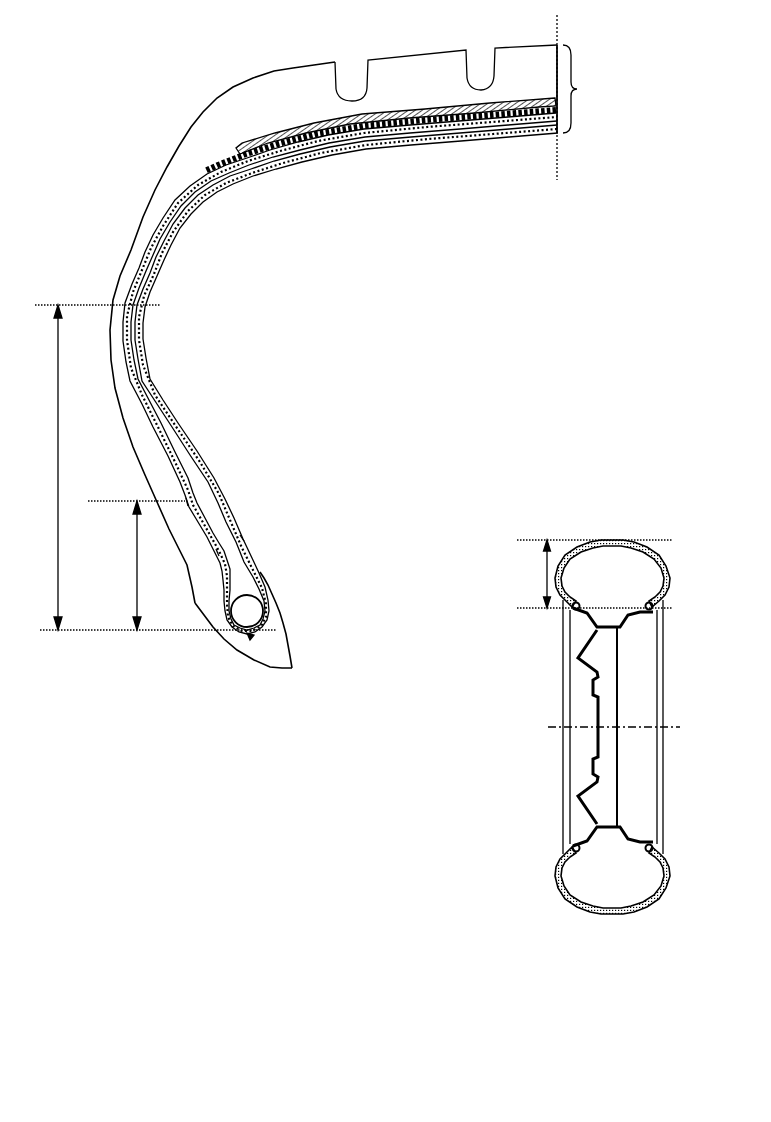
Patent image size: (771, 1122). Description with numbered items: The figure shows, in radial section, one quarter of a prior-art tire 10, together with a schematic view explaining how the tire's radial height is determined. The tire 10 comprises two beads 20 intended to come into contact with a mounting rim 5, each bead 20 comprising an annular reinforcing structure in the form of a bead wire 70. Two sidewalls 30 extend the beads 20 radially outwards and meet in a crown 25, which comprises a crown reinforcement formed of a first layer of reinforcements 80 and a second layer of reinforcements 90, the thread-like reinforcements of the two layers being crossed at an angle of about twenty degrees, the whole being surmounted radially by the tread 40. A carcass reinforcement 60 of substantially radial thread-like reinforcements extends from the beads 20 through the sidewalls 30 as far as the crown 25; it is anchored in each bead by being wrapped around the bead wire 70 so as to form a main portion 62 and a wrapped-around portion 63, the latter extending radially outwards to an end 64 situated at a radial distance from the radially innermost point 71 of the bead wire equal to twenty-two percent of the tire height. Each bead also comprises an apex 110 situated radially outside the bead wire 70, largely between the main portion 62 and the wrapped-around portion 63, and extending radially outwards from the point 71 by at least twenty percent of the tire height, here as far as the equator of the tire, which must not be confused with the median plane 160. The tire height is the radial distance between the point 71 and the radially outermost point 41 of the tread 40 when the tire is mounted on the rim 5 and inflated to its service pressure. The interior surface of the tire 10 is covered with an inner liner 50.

In FIG. 4, the mounting rim 5 is at (686, 650).
In FIG. 3, the tire 10 is at (149, 129).
In FIG. 4, the tire 10 is at (688, 577).
In FIG. 3, the bead 20 is at (212, 595).
In FIG. 3, the crown 25 is at (591, 89).
In FIG. 3, the sidewall 30 is at (117, 285).
In FIG. 3, the tread 40 is at (446, 89).
In FIG. 4, the radially outermost point of the tread 41 is at (612, 532).
In FIG. 3, the inner liner 50 is at (167, 423).
In FIG. 3, the carcass reinforcement 60 is at (135, 348).
In FIG. 3, the main portion 62 is at (242, 538).
In FIG. 3, the wrapped-around portion 63 is at (217, 552).
In FIG. 3, the end of the wrapped-around portion 64 is at (179, 500).
In FIG. 3, the bead wire 70 is at (243, 618).
In FIG. 4, the bead wire 70 is at (578, 606).
In FIG. 3, the radially innermost point of the annular reinforcing structure 71 is at (257, 641).
In FIG. 3, the first layer of reinforcements 80 is at (290, 130).
In FIG. 3, the second layer of reinforcements 90 is at (317, 125).
In FIG. 3, the apex 110 is at (245, 580).
In FIG. 3, the median plane 160 is at (559, 171).